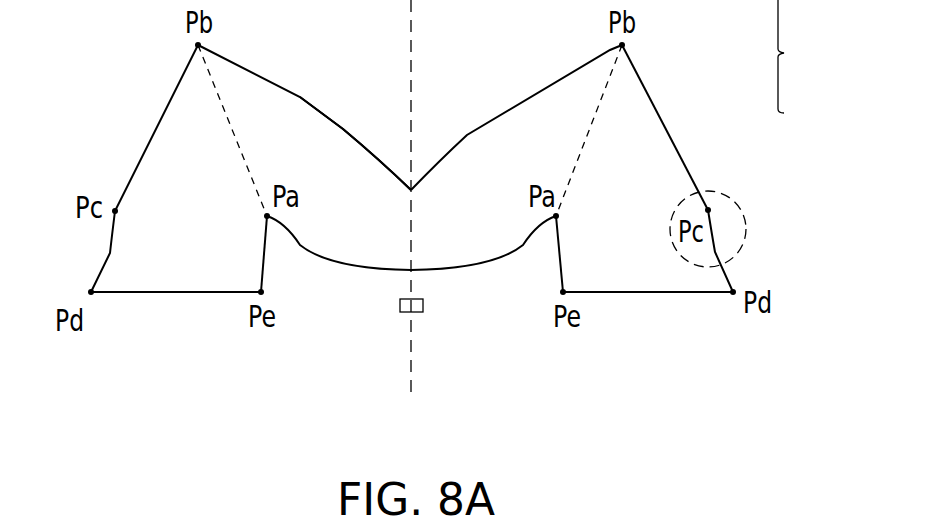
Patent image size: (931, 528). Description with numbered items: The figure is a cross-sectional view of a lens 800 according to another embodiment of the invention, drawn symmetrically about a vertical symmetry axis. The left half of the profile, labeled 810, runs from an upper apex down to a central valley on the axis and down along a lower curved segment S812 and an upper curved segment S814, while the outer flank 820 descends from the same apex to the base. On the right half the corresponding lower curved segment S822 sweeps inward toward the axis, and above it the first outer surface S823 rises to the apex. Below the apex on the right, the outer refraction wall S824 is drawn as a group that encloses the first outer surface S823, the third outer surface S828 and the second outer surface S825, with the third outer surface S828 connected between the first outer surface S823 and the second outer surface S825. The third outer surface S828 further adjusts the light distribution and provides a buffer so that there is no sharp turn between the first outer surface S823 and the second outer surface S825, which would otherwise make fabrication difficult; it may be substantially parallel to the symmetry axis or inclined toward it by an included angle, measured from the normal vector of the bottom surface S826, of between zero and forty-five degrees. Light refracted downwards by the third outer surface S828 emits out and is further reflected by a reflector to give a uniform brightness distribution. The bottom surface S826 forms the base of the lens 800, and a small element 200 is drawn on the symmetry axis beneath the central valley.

The lens 800 is at (830, 455).
The first curved surface 810 is at (259, 95).
The second surface 820 is at (177, 121).
The light emitting element 200 is at (399, 305).
The first lower curved surface segment S812 is at (333, 264).
The first upper curved surface segment S814 is at (331, 119).
The second lower curved surface segment S822 is at (555, 255).
The first outer surface S823 is at (635, 68).
The outer refraction wall S824 is at (811, 56).
The second outer surface S825 is at (727, 277).
The bottom surface S826 is at (705, 293).
The third outer surface S828 is at (713, 240).